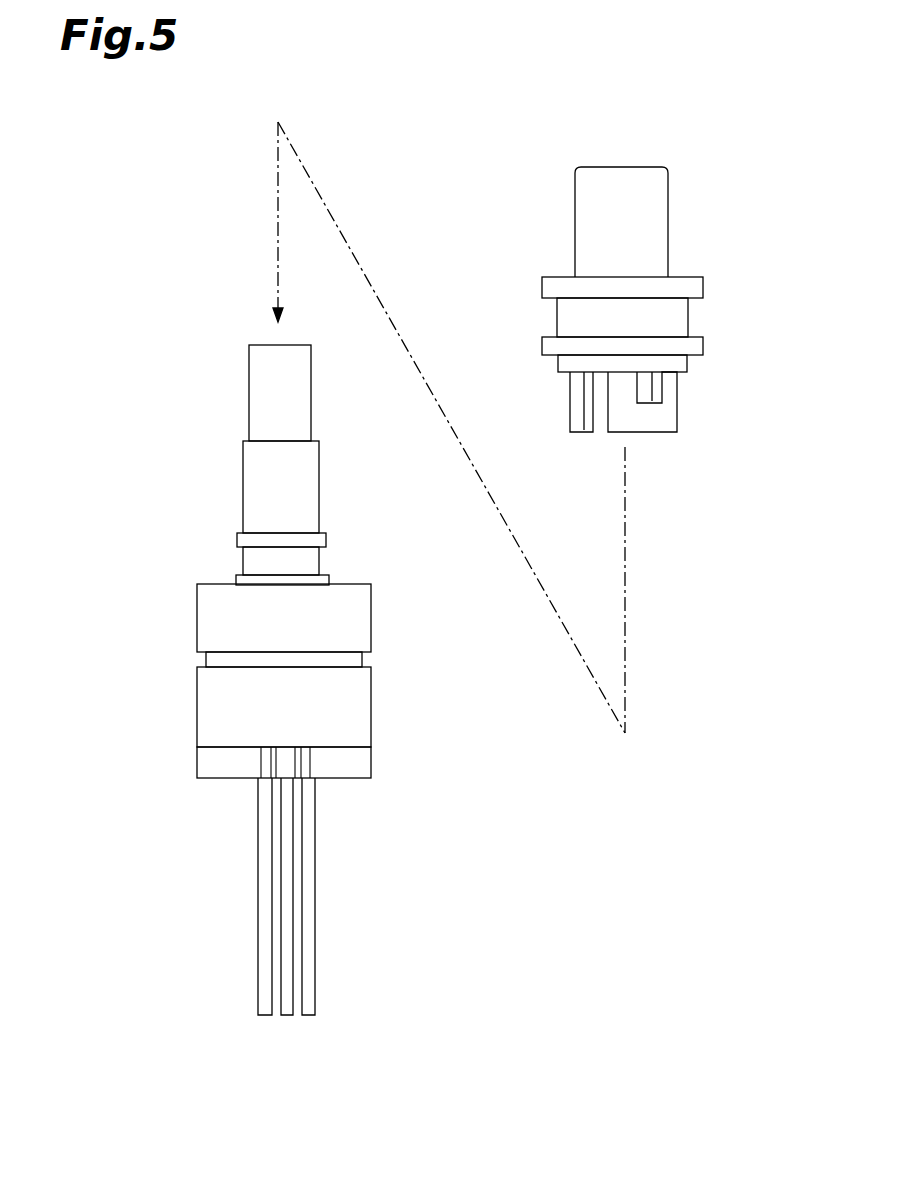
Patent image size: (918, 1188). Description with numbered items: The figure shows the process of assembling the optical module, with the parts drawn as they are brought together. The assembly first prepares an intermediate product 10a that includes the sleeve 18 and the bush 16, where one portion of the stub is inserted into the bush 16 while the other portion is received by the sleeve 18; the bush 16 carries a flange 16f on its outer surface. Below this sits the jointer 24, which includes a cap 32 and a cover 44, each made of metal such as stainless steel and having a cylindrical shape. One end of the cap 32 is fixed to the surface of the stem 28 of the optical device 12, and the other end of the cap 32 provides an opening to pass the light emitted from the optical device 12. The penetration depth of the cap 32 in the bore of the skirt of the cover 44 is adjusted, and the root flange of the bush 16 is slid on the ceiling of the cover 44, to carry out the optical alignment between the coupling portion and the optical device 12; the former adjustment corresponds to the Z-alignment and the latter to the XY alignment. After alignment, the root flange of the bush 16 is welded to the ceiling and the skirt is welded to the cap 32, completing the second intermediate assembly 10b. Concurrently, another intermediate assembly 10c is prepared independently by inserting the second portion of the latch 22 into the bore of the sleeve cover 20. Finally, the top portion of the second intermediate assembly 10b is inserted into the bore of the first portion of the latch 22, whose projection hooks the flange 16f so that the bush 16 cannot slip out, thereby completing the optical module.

The intermediate product 10a is at (168, 346).
The second intermediate assembly 10b is at (68, 346).
The intermediate assembly 10c is at (792, 172).
The optical device 12 is at (178, 714).
The bush 16 is at (312, 491).
The flange 16f is at (323, 542).
The sleeve 18 is at (306, 393).
The sleeve cover 20 is at (660, 210).
The latch 22 is at (670, 413).
The jointer 24 is at (458, 690).
The stem 28 is at (362, 763).
The cap 32 is at (362, 700).
The cover 44 is at (362, 622).